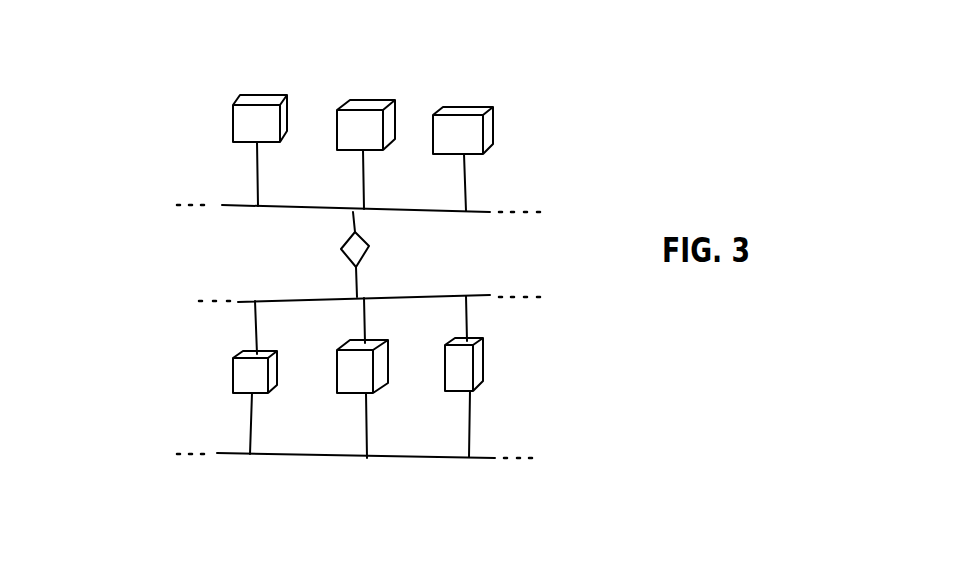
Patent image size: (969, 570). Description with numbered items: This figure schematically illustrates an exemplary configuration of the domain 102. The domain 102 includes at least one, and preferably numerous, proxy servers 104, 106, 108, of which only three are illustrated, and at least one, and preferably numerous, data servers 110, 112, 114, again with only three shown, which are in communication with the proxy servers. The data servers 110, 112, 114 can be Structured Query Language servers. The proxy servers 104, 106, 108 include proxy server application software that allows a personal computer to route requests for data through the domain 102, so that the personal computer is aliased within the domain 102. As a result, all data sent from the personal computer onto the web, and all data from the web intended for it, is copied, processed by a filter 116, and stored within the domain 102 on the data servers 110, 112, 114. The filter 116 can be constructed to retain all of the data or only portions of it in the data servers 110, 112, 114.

The domain 102 is at (187, 178).
The proxy server 104 is at (252, 378).
The proxy server 106 is at (346, 372).
The proxy server 108 is at (466, 365).
The data server 110 is at (263, 120).
The data server 112 is at (374, 120).
The data server 114 is at (473, 125).
The filter 116 is at (357, 247).